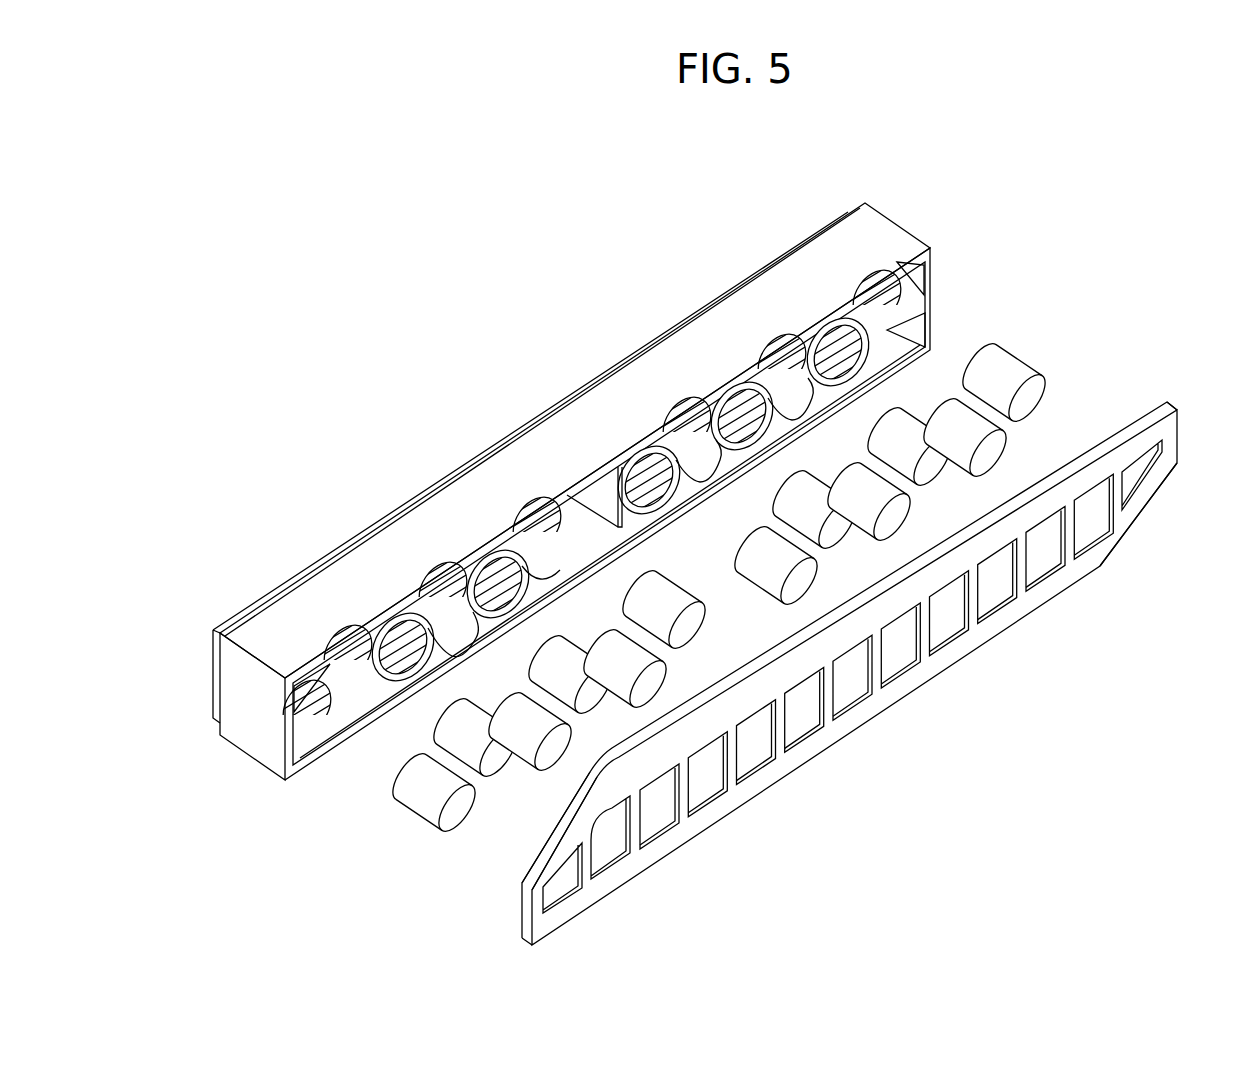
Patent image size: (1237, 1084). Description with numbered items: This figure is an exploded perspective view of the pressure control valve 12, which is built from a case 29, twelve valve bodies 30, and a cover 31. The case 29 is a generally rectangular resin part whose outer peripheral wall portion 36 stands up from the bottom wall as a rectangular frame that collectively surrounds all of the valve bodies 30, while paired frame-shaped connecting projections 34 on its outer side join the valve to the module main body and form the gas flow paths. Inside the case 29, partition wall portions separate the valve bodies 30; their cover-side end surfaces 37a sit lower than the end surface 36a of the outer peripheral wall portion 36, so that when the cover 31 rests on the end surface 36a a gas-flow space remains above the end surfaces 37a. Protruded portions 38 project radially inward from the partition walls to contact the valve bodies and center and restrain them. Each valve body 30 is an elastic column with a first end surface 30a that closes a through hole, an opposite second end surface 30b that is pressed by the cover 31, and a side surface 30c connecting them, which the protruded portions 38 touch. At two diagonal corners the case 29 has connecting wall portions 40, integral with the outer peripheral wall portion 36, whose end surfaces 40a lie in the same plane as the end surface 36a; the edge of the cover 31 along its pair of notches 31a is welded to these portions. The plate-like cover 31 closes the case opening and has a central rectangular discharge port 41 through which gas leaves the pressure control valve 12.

The pressure control valve 12 is at (330, 305).
The case 29 is at (910, 228).
The valve body 30 is at (1027, 370).
The first end surface 30a is at (386, 804).
The second end surface 30b is at (461, 835).
The side surface 30c is at (434, 827).
The cover 31 is at (1170, 402).
The notches 31a is at (1147, 522).
The connecting projections 34 is at (262, 597).
The outer peripheral wall portion 36 is at (540, 442).
The end surface of the outer peripheral wall portion 36a is at (662, 420).
The end surfaces of the partition wall portions 37a is at (760, 350).
The protruded portions 38 is at (408, 612).
The connecting wall portions 40 is at (915, 325).
The end surfaces of the connecting wall portions 40a is at (930, 342).
The discharge port 41 is at (880, 712).